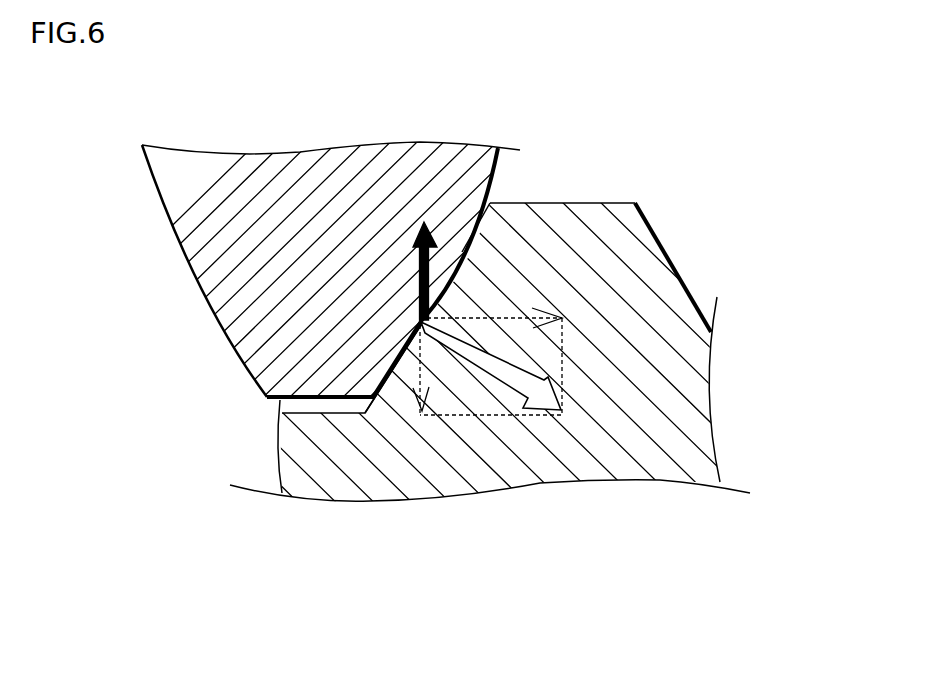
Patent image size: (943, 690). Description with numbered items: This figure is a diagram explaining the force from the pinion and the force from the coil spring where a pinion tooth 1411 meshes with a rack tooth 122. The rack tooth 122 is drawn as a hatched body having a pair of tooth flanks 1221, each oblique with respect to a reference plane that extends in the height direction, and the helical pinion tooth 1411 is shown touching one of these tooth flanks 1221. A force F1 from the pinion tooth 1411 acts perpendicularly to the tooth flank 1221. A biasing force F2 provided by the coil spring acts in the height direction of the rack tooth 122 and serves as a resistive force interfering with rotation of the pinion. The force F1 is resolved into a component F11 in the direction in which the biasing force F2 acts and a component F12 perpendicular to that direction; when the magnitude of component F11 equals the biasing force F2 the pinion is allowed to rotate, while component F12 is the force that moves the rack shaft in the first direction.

The pinion tooth 1411 is at (182, 238).
The rack tooth 122 is at (650, 285).
The tooth flank 1221 is at (657, 237).
The force from the pinion tooth F1 is at (497, 377).
The component of the force F1 in the biasing-force direction F11 is at (427, 388).
The component of the force F1 perpendicular to the biasing-force direction F12 is at (492, 317).
The biasing force F2 is at (417, 272).